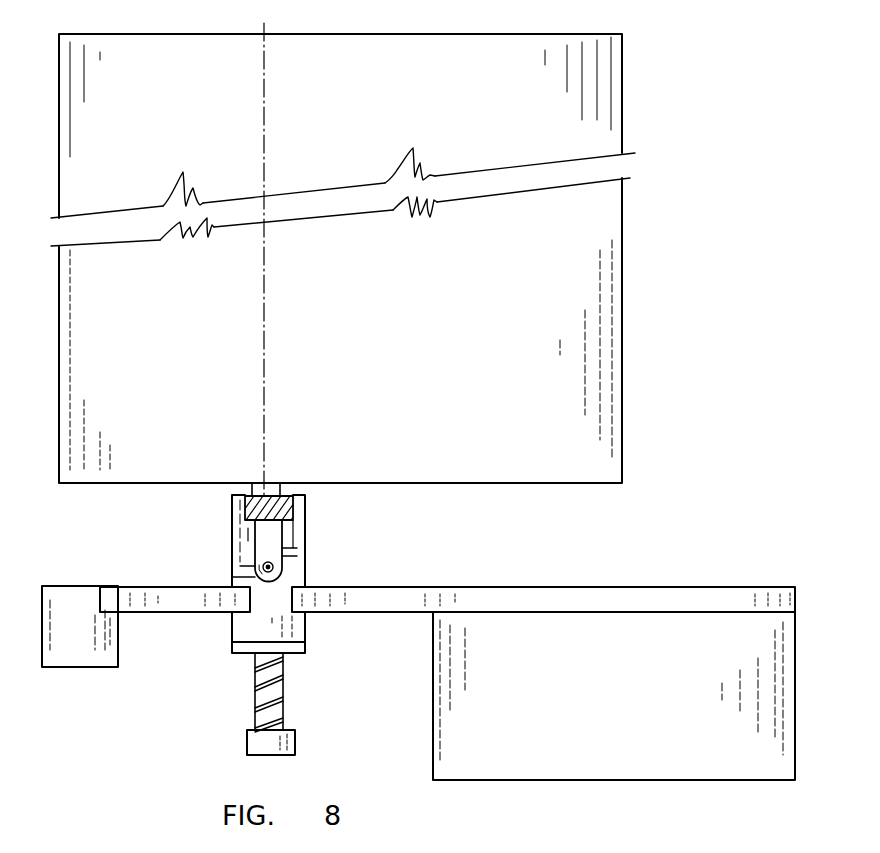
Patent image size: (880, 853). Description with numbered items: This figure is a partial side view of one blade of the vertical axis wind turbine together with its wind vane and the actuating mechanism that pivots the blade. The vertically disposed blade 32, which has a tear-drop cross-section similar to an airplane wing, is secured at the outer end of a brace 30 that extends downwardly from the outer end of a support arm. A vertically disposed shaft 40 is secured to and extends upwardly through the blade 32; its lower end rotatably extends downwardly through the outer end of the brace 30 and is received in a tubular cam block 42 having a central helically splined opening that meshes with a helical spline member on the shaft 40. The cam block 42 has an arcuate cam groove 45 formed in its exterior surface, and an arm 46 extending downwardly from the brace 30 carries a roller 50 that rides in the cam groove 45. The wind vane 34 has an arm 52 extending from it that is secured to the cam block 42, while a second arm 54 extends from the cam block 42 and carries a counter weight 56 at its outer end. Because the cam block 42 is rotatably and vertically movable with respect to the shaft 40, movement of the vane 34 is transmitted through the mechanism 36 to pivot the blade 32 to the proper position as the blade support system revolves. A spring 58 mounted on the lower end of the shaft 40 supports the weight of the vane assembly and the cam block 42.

The brace 30 is at (247, 507).
The blade 32 is at (643, 128).
The wind vane 34 is at (695, 628).
The actuating mechanism 36 is at (220, 530).
The shaft 40 is at (278, 489).
The cam block 42 is at (300, 530).
The cam groove 45 is at (297, 548).
The arm 46 is at (262, 549).
The roller 50 is at (274, 570).
The arm 52 is at (388, 617).
The arm 54 is at (150, 602).
The counter weight 56 is at (70, 648).
The spring 58 is at (285, 697).